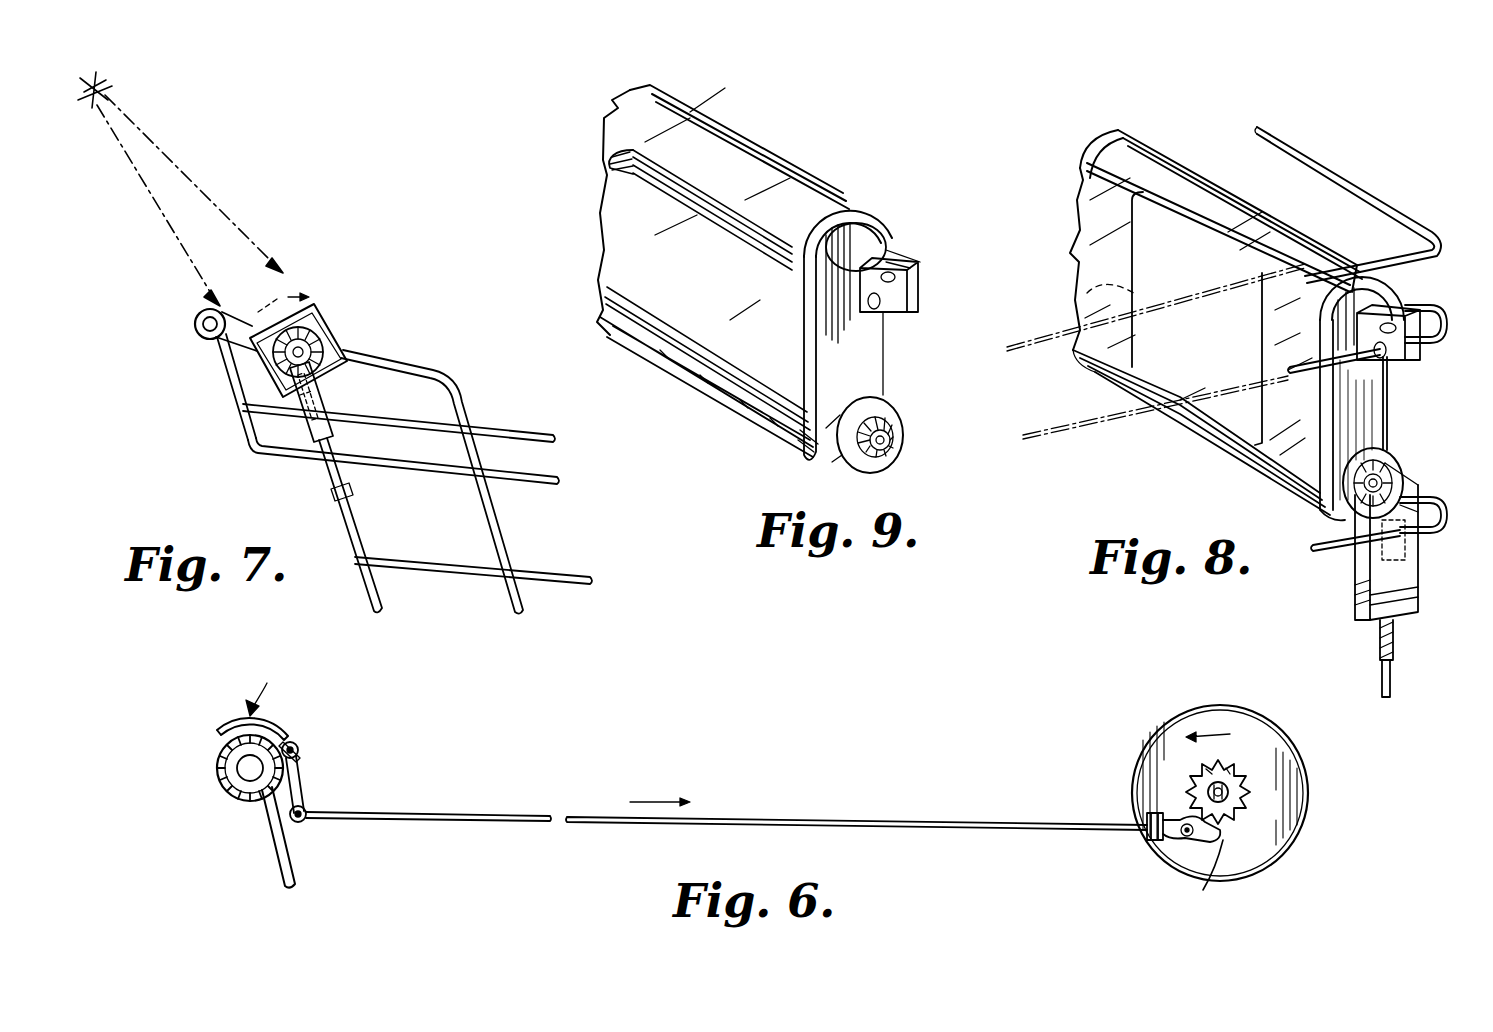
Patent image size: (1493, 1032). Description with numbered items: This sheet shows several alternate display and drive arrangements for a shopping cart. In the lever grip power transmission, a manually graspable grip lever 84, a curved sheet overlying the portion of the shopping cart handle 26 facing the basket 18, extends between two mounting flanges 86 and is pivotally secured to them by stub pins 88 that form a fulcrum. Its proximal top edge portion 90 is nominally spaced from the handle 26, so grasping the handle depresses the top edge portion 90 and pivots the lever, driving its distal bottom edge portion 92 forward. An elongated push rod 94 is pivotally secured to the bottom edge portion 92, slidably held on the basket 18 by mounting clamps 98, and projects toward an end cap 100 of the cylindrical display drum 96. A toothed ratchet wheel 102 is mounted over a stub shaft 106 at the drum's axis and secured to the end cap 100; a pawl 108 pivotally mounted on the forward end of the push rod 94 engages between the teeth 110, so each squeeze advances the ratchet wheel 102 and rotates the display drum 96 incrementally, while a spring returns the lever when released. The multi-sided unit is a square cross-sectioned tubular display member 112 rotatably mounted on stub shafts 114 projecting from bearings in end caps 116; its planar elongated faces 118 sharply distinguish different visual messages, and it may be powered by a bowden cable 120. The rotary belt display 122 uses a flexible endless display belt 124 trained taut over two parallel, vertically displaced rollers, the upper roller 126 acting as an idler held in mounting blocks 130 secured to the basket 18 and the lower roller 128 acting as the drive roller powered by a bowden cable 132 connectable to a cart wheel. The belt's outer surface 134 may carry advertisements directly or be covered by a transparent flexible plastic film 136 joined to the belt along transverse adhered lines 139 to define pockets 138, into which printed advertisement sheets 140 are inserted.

In FIG. 8, the basket 18 is at (1449, 335).
In FIG. 6, the basket 18 is at (273, 840).
In FIG. 6, the shopping cart handle 26 is at (217, 770).
In FIG. 6, the grip lever 84 is at (290, 733).
In FIG. 6, the mounting flanges 86 is at (307, 757).
In FIG. 6, the stub pins 88 is at (300, 750).
In FIG. 6, the top edge portion 90 is at (217, 730).
In FIG. 6, the bottom edge portion 92 is at (307, 823).
In FIG. 6, the push rod 94 is at (727, 820).
In FIG. 6, the display drum 96 is at (1237, 707).
In FIG. 6, the mounting clamps 98 is at (1147, 800).
In FIG. 6, the end cap 100 is at (1280, 763).
In FIG. 6, the ratchet wheel 102 is at (1253, 793).
In FIG. 6, the stub shaft 106 is at (1253, 800).
In FIG. 6, the pawl 108 is at (1220, 840).
In FIG. 6, the teeth 110 is at (1200, 767).
In FIG. 7, the display member 112 is at (313, 303).
In FIG. 7, the stub shafts 114 is at (277, 350).
In FIG. 7, the end caps 116 is at (343, 347).
In FIG. 7, the planar elongated faces 118 is at (280, 297).
In FIG. 7, the bowden cable 120 is at (340, 510).
In FIG. 9, the rotary belt display 122 is at (803, 167).
In FIG. 8, the rotary belt display 122 is at (1166, 143).
In FIG. 9, the display belt 124 is at (813, 457).
In FIG. 8, the display belt 124 is at (1087, 220).
In FIG. 9, the upper roller 126 is at (870, 223).
In FIG. 8, the upper roller 126 is at (1387, 282).
In FIG. 9, the lower roller 128 is at (853, 387).
In FIG. 8, the lower roller 128 is at (1360, 443).
In FIG. 9, the mounting blocks 130 is at (903, 277).
In FIG. 8, the mounting blocks 130 is at (1400, 362).
In FIG. 8, the bowden cable 132 is at (1395, 633).
In FIG. 9, the outer surface 134 is at (800, 427).
In FIG. 8, the outer surface 134 is at (1297, 457).
In FIG. 9, the plastic film 136 is at (610, 157).
In FIG. 9, the pockets 138 is at (660, 110).
In FIG. 8, the pockets 138 is at (1213, 329).
In FIG. 9, the adhered lines 139 is at (613, 133).
In FIG. 9, the printed advertisement sheets 140 is at (820, 247).